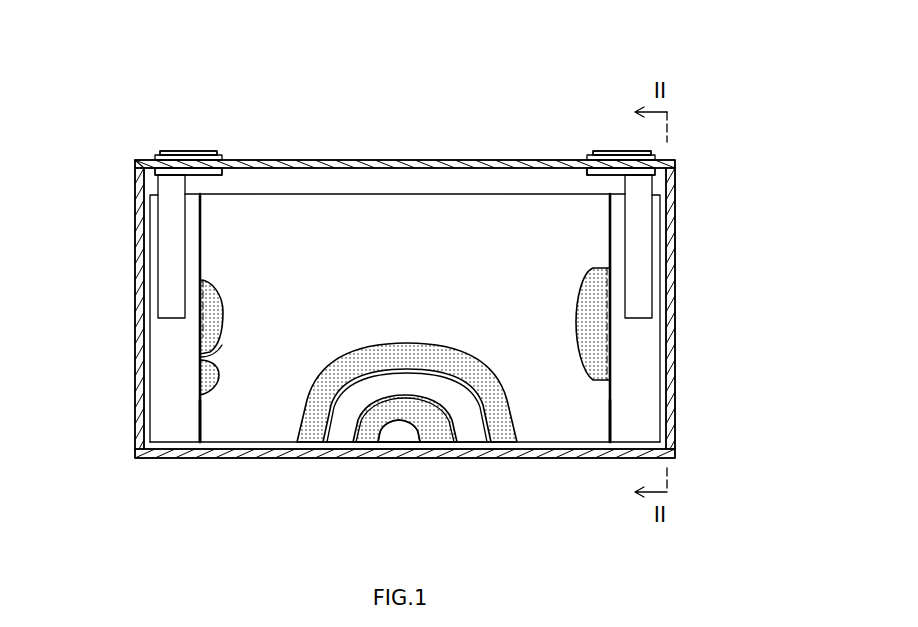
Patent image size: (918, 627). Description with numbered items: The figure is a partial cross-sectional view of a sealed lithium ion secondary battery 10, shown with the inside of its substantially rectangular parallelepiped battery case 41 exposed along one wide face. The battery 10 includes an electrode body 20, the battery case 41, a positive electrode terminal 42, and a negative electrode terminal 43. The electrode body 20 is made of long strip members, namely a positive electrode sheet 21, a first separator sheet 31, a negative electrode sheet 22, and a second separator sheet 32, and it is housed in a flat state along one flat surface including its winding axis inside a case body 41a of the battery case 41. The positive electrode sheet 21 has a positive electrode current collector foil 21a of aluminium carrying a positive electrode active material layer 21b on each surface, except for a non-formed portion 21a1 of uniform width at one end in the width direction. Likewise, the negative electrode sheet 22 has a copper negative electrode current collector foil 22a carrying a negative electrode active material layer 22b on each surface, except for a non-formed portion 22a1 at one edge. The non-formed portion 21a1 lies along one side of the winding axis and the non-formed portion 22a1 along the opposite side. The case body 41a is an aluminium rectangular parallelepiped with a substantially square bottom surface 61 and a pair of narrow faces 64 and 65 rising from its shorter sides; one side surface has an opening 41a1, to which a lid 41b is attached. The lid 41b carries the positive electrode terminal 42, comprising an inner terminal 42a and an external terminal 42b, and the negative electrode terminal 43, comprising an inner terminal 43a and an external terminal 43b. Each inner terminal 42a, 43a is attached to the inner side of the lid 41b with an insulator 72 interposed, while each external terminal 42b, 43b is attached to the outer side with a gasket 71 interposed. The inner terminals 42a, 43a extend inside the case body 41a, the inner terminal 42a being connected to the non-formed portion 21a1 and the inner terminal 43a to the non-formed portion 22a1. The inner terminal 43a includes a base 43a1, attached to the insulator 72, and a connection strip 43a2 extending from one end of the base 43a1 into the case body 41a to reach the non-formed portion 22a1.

The lithium ion secondary battery 10 is at (481, 85).
The electrode body 20 is at (331, 182).
The positive electrode sheet 21 is at (373, 441).
The positive electrode current collector foil 21a is at (166, 383).
The non-formed portion 21a1 is at (173, 442).
The positive electrode active material layer 21b is at (225, 320).
The negative electrode sheet 22 is at (305, 442).
The negative electrode current collector foil 22a is at (660, 380).
The non-formed portion 22a1 is at (657, 430).
The negative electrode active material layer 22b is at (219, 380).
The first separator sheet 31 is at (222, 354).
The second separator sheet 32 is at (408, 438).
The battery case 41 is at (716, 240).
The case body 41a is at (128, 242).
The opening 41a1 is at (138, 150).
The lid 41b is at (395, 159).
The positive electrode terminal 42 is at (188, 134).
The inner terminal 42a is at (141, 185).
The external terminal 42b is at (212, 153).
The negative electrode terminal 43 is at (630, 134).
The inner terminal 43a is at (666, 185).
The base 43a1 is at (598, 178).
The connection strip 43a2 is at (653, 272).
The external terminal 43b is at (600, 152).
The bottom surface 61 is at (510, 450).
The narrow face 64 is at (137, 322).
The narrow face 65 is at (666, 318).
The gasket 71 is at (157, 156).
The insulator 72 is at (225, 176).